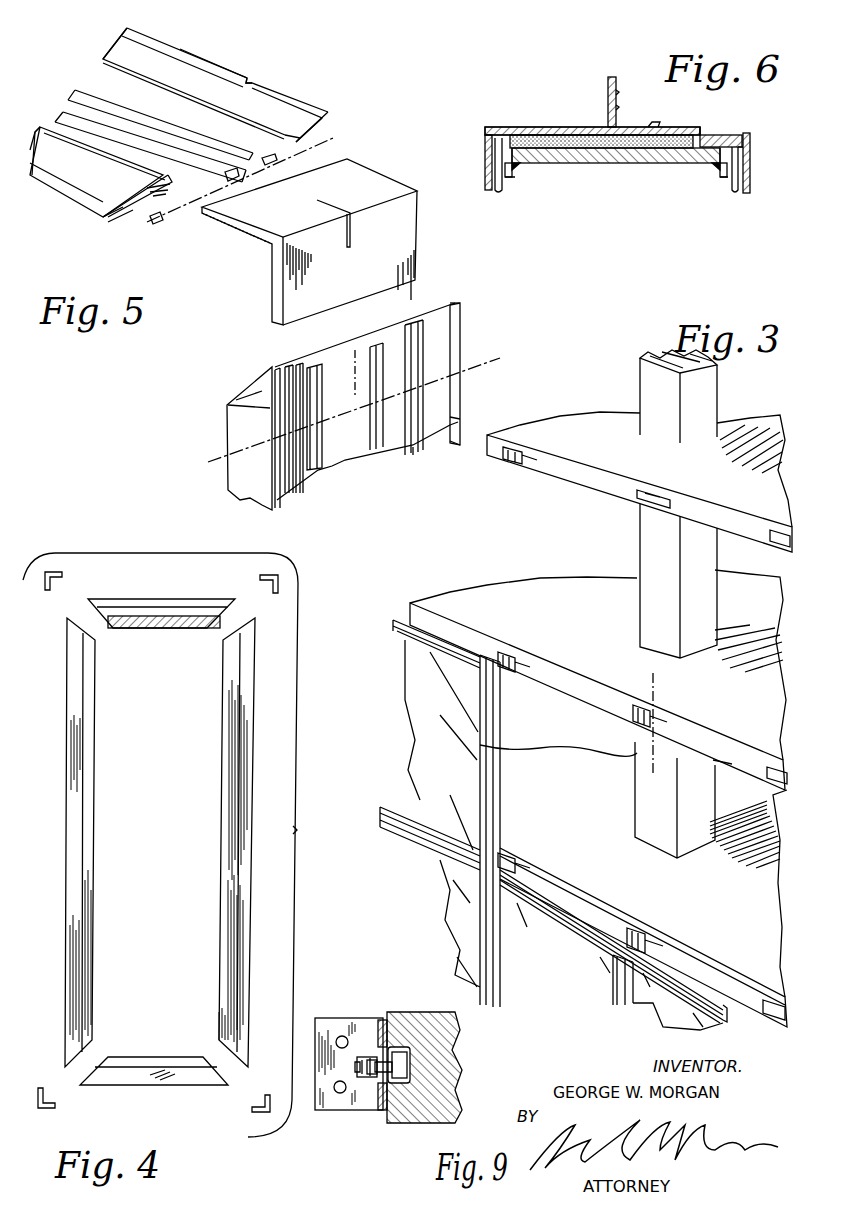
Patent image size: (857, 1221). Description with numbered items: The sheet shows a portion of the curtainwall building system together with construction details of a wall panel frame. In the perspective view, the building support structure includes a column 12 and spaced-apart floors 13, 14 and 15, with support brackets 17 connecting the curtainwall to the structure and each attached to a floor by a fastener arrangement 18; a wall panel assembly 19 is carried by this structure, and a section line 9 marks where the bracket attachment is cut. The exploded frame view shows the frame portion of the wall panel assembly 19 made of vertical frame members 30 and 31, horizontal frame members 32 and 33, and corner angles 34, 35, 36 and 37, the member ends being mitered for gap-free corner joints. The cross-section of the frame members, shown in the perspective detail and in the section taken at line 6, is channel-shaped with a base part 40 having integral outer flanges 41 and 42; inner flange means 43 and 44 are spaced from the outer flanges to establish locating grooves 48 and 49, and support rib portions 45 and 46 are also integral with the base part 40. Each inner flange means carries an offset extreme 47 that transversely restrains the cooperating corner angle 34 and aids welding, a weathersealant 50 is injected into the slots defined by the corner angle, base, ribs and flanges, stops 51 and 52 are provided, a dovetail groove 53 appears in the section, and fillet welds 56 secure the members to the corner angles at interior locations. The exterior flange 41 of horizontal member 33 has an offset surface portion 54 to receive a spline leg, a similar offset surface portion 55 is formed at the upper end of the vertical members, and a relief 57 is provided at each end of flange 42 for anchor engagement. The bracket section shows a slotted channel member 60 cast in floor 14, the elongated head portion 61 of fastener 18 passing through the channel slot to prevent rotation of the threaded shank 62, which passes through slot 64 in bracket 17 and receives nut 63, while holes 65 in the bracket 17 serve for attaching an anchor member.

In FIG. 3, the column 12 is at (640, 385).
In FIG. 3, the floor 13 is at (562, 468).
In FIG. 3, the floor 14 is at (550, 675).
In FIG. 9, the floor 14 is at (415, 1012).
In FIG. 3, the floor 15 is at (397, 770).
In FIG. 3, the support bracket 17 is at (505, 465).
In FIG. 9, the support bracket 17 is at (330, 1020).
In FIG. 3, the fastener arrangement 18 is at (660, 500).
In FIG. 9, the fastener arrangement 18 is at (364, 1082).
In FIG. 3, the wall panel assembly 19 is at (414, 728).
In FIG. 4, the vertical frame member 30 is at (67, 840).
In FIG. 5, the vertical frame member 31 is at (347, 450).
In FIG. 6, the vertical frame member 31 is at (515, 127).
In FIG. 4, the vertical frame member 31 is at (247, 800).
In FIG. 4, the horizontal frame member 32 is at (150, 1085).
In FIG. 5, the horizontal frame member 33 is at (226, 63).
In FIG. 4, the horizontal frame member 33 is at (165, 612).
In FIG. 5, the corner angle 34 is at (362, 173).
In FIG. 6, the corner angle 34 is at (600, 165).
In FIG. 4, the corner angle 34 is at (262, 576).
In FIG. 4, the corner angle 35 is at (255, 1110).
In FIG. 4, the corner angle 36 is at (42, 1108).
In FIG. 4, the corner angle 37 is at (62, 574).
In FIG. 5, the base part 40 is at (63, 112).
In FIG. 6, the base part 40 is at (672, 127).
In FIG. 5, the outer flange 41 is at (93, 203).
In FIG. 6, the outer flange 41 is at (485, 160).
In FIG. 5, the outer flange 42 is at (172, 57).
In FIG. 6, the outer flange 42 is at (750, 160).
In FIG. 5, the inner flange means 43 is at (153, 180).
In FIG. 6, the inner flange means 43 is at (508, 170).
In FIG. 5, the inner flange means 44 is at (283, 115).
In FIG. 6, the inner flange means 44 is at (733, 170).
In FIG. 5, the support rib portion 45 is at (168, 187).
In FIG. 6, the support rib portion 45 is at (555, 155).
In FIG. 5, the support rib portion 46 is at (87, 86).
In FIG. 6, the support rib portion 46 is at (665, 160).
In FIG. 5, the offset extreme 47 is at (104, 58).
In FIG. 6, the offset extreme 47 is at (512, 172).
In FIG. 5, the locating groove 48 is at (133, 199).
In FIG. 6, the locating groove 48 is at (499, 180).
In FIG. 5, the locating groove 49 is at (300, 140).
In FIG. 6, the locating groove 49 is at (737, 165).
In FIG. 6, the weathersealant 50 is at (585, 135).
In FIG. 5, the stop 51 is at (153, 222).
In FIG. 6, the stop 51 is at (612, 78).
In FIG. 5, the stop 52 is at (231, 176).
In FIG. 6, the stop 52 is at (652, 127).
In FIG. 5, the offset step 53 is at (270, 160).
In FIG. 6, the offset step 53 is at (708, 135).
In FIG. 5, the offset surface portion 54 is at (35, 148).
In FIG. 5, the offset surface portion 55 is at (258, 388).
In FIG. 6, the fillet weld 56 is at (516, 166).
In FIG. 5, the relief 57 is at (255, 82).
In FIG. 9, the slotted channel member 60 is at (395, 1080).
In FIG. 9, the head portion 61 is at (410, 1065).
In FIG. 9, the threaded shank 62 is at (385, 1090).
In FIG. 9, the nut 63 is at (380, 1048).
In FIG. 9, the slot 64 is at (375, 1085).
In FIG. 9, the hole 65 is at (342, 1036).
In FIG. 5, the section line 6- 6 is at (215, 450).
In FIG. 3, the section line 9- 9 is at (668, 698).